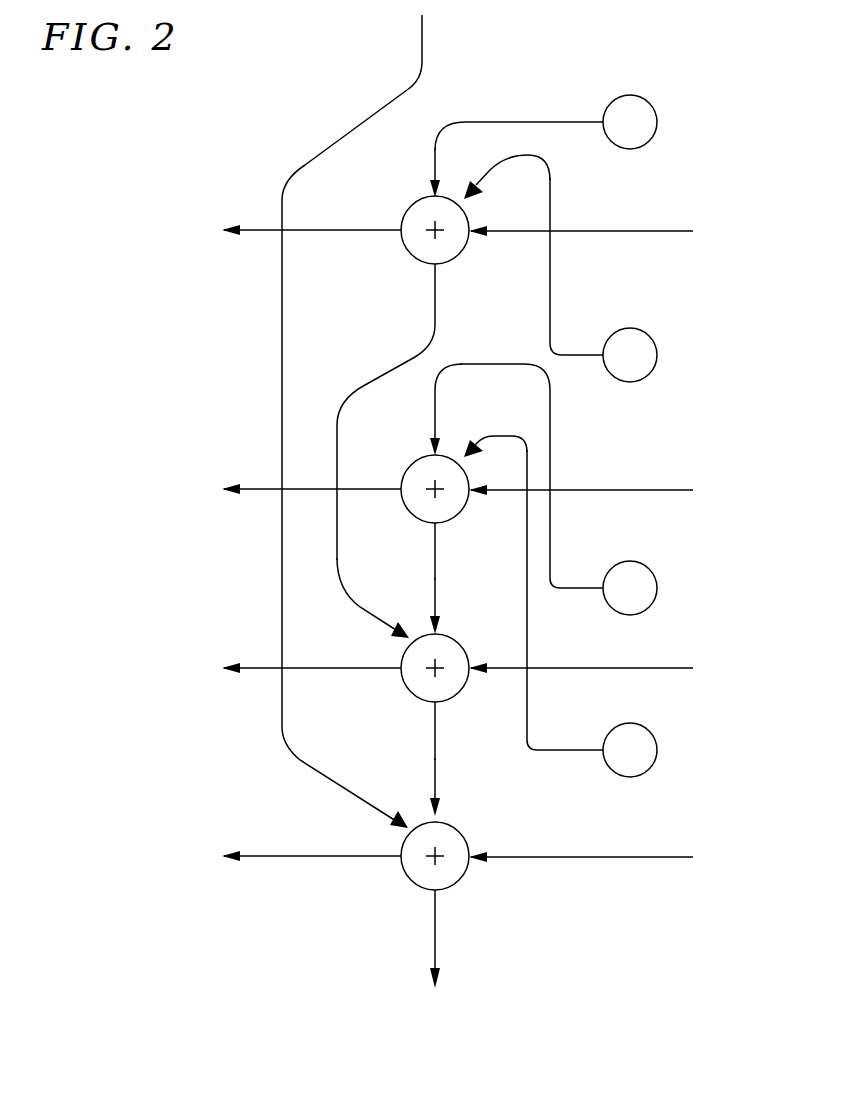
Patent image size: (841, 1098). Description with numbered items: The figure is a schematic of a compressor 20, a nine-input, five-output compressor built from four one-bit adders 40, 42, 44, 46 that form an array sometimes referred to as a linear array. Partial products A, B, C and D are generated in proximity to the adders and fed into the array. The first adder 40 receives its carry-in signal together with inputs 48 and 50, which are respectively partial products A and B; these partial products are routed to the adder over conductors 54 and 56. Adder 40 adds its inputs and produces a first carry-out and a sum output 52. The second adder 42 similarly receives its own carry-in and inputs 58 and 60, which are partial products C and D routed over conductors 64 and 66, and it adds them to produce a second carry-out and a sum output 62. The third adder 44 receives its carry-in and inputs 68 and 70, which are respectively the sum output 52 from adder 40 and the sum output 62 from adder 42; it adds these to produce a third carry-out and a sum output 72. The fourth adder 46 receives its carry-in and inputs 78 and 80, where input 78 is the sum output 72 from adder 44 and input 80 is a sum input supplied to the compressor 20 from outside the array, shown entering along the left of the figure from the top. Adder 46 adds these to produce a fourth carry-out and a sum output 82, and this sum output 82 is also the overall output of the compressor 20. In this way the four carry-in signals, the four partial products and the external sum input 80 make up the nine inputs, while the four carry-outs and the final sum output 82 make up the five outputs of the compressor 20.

The compressor 20 is at (576, 953).
The adder 40 is at (404, 252).
The adder 42 is at (406, 512).
The adder 44 is at (406, 692).
The adder 46 is at (406, 881).
The input 48 is at (432, 146).
The input 50 is at (490, 176).
The sum output 52 is at (388, 370).
The conductor 54 is at (524, 120).
The conductor 56 is at (552, 286).
The input 58 is at (432, 408).
The input 60 is at (488, 440).
The sum output 62 is at (437, 544).
The conductor 64 is at (552, 536).
The conductor 66 is at (529, 706).
The input 68 is at (378, 614).
The input 70 is at (437, 598).
The sum output 72 is at (437, 723).
The input 78 is at (437, 773).
The input 80 is at (352, 122).
The sum output 82 is at (437, 935).